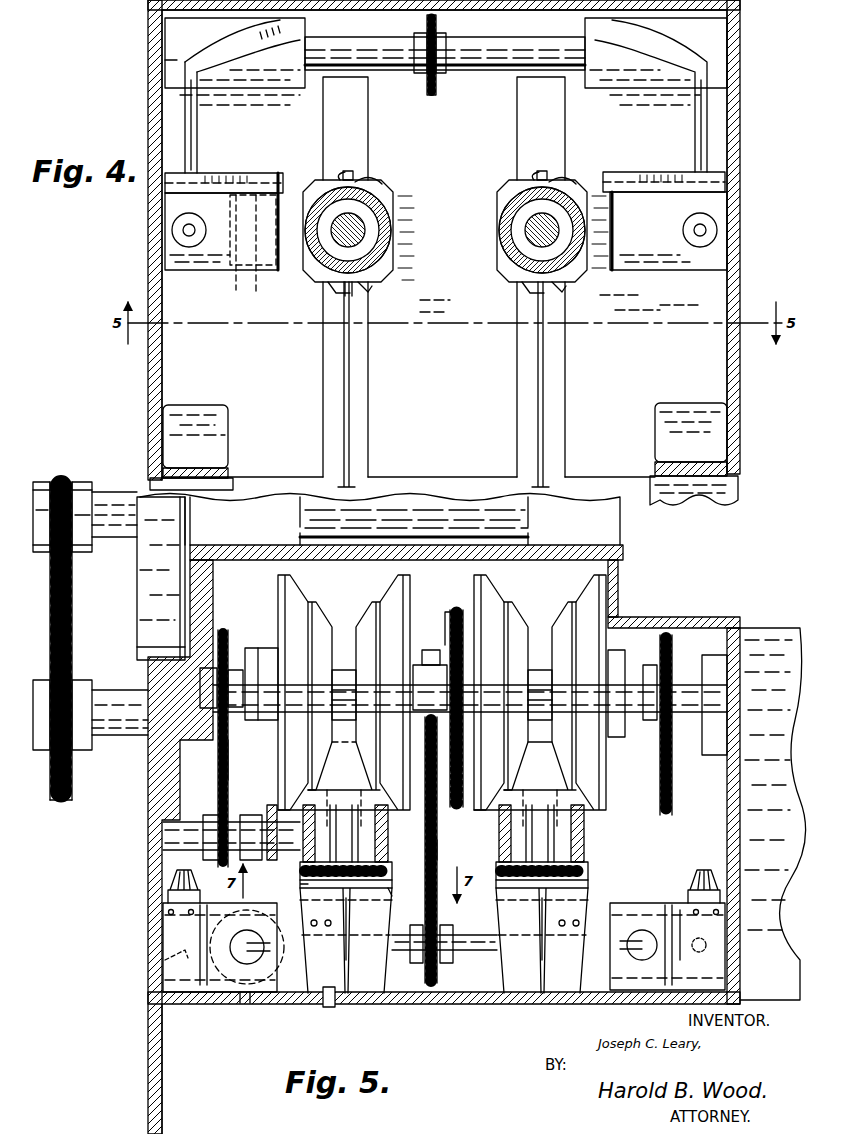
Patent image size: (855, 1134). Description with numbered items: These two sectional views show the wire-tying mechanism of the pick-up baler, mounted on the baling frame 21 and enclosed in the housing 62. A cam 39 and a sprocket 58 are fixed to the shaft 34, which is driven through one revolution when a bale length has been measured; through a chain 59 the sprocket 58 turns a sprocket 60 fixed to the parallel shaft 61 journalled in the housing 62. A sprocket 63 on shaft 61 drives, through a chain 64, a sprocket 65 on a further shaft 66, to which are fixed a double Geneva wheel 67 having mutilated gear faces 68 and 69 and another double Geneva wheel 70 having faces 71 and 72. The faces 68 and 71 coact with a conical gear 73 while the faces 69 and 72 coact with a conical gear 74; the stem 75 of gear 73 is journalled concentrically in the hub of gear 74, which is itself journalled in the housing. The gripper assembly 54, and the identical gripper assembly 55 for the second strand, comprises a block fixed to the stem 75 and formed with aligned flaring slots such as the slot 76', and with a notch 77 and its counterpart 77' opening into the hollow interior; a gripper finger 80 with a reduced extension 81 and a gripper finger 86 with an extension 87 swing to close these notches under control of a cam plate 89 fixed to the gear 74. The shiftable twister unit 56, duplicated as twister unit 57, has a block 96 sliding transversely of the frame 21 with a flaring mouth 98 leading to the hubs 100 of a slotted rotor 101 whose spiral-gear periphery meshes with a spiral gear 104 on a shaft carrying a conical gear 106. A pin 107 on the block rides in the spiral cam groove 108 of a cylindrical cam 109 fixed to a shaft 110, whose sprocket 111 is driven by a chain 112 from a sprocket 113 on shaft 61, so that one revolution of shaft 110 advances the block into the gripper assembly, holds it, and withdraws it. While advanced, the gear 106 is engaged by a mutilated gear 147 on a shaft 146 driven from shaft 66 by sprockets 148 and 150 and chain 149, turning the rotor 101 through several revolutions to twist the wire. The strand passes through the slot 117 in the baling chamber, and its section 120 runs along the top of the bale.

In FIG. 5, the frame 21 is at (148, 1049).
In FIG. 5, the shaft 34 is at (108, 490).
In FIG. 5, the cam 39 is at (137, 569).
In FIG. 4, the gripper assembly 54 is at (355, 224).
In FIG. 5, the gripper assembly 54 is at (340, 916).
In FIG. 4, the gripper assembly 55 is at (574, 180).
In FIG. 5, the gripper assembly 55 is at (598, 908).
In FIG. 4, the shiftable twister unit 56 is at (232, 216).
In FIG. 5, the shiftable twister unit 56 is at (191, 952).
In FIG. 4, the shiftable twister unit 57 is at (659, 170).
In FIG. 5, the shiftable twister unit 57 is at (668, 901).
In FIG. 5, the sprocket 58 is at (78, 480).
In FIG. 5, the chain 59 is at (72, 612).
In FIG. 5, the sprocket 60 is at (56, 801).
In FIG. 5, the shaft 61 is at (122, 738).
In FIG. 4, the housing 62 is at (742, 124).
In FIG. 5, the housing 62 is at (626, 613).
In FIG. 5, the sprocket 63 is at (451, 850).
In FIG. 5, the chain 64 is at (457, 608).
In FIG. 5, the sprocket 65 is at (447, 612).
In FIG. 5, the shaft 66 is at (344, 670).
In FIG. 5, the double Geneva wheel 67 is at (416, 663).
In FIG. 5, the mutilated gear face 68 is at (368, 614).
In FIG. 5, the mutilated gear face 69 is at (397, 590).
In FIG. 5, the double Geneva wheel 70 is at (268, 657).
In FIG. 5, the mutilated gear face 71 is at (320, 615).
In FIG. 5, the mutilated gear face 72 is at (298, 595).
In FIG. 5, the conical gear 73 is at (343, 765).
In FIG. 4, the conical gear 74 is at (365, 232).
In FIG. 5, the conical gear 74 is at (388, 833).
In FIG. 4, the stem 75 is at (380, 252).
In FIG. 5, the stem 75 is at (388, 850).
In FIG. 5, the flaring slot 76' is at (347, 963).
In FIG. 4, the notch 77 is at (379, 294).
In FIG. 5, the lug 77' is at (402, 892).
In FIG. 4, the gripper finger 80 is at (376, 177).
In FIG. 4, the extension 81 is at (347, 170).
In FIG. 4, the gripper finger 86 is at (334, 288).
In FIG. 4, the extension 87 is at (348, 292).
In FIG. 5, the extension 87 is at (347, 876).
In FIG. 4, the cam plate 89 is at (322, 200).
In FIG. 5, the cam plate 89 is at (300, 878).
In FIG. 4, the block 96 is at (265, 196).
In FIG. 5, the flaring mouth 98 is at (250, 1003).
In FIG. 4, the hubs 100 is at (254, 282).
In FIG. 4, the rotor 101 is at (232, 275).
In FIG. 5, the rotor 101 is at (243, 1005).
In FIG. 5, the spiral gear 104 is at (163, 949).
In FIG. 4, the conical gear 106 is at (200, 220).
In FIG. 5, the conical gear 106 is at (166, 893).
In FIG. 4, the pin 107 is at (198, 112).
In FIG. 5, the pin 107 is at (166, 966).
In FIG. 4, the spiral cam groove 108 is at (235, 53).
In FIG. 4, the cylindrical cam 109 is at (300, 30).
In FIG. 4, the shaft 110 is at (388, 42).
In FIG. 5, the shaft 110 is at (472, 935).
In FIG. 4, the sprocket 111 is at (433, 95).
In FIG. 5, the sprocket 111 is at (445, 914).
In FIG. 5, the chain 112 is at (438, 849).
In FIG. 5, the sprocket 113 is at (432, 650).
In FIG. 4, the slot 117 is at (368, 110).
In FIG. 5, the slot 117 is at (330, 1006).
In FIG. 4, the strand section 120 is at (352, 358).
In FIG. 5, the shaft 146 is at (185, 822).
In FIG. 5, the mutilated gear 147 is at (268, 803).
In FIG. 5, the sprocket 148 is at (253, 814).
In FIG. 5, the chain 149 is at (229, 768).
In FIG. 5, the sprocket 150 is at (226, 632).